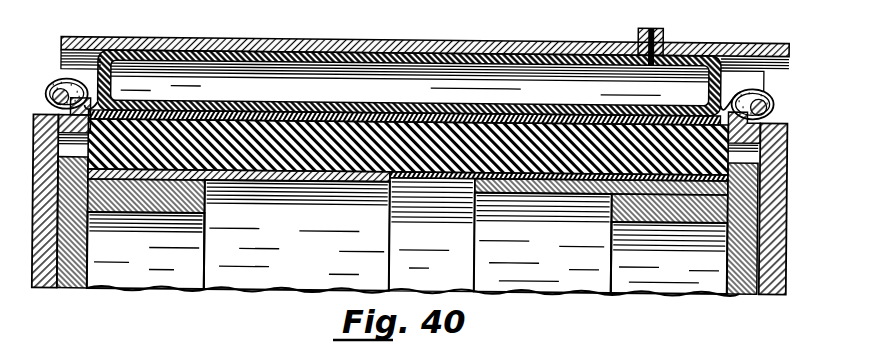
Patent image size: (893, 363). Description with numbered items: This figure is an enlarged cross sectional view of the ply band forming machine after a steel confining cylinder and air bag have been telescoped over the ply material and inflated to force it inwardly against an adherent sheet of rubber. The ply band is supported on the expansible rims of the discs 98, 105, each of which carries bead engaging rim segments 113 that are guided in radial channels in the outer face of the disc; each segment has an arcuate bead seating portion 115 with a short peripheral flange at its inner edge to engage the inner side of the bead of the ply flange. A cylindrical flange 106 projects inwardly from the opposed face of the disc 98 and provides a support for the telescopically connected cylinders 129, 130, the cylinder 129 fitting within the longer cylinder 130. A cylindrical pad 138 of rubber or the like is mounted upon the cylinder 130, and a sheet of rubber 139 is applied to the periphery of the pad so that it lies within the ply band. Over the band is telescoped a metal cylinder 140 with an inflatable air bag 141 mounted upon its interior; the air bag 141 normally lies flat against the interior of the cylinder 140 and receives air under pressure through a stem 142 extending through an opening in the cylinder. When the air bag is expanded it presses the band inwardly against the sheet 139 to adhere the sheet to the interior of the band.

The disc 98 is at (747, 291).
The disc 105 is at (82, 251).
The cylindrical flange 106 is at (653, 212).
The bead engaging rim segment 113 is at (45, 291).
The arcuate bead seating portion 115 is at (33, 118).
The cylinder 129 is at (513, 192).
The cylinder 130 is at (320, 190).
The cylindrical pad 138 is at (248, 178).
The sheet of rubber 139 is at (212, 127).
The metal cylinder 140 is at (297, 41).
The inflatable air bag 141 is at (471, 53).
The stem 142 is at (663, 31).